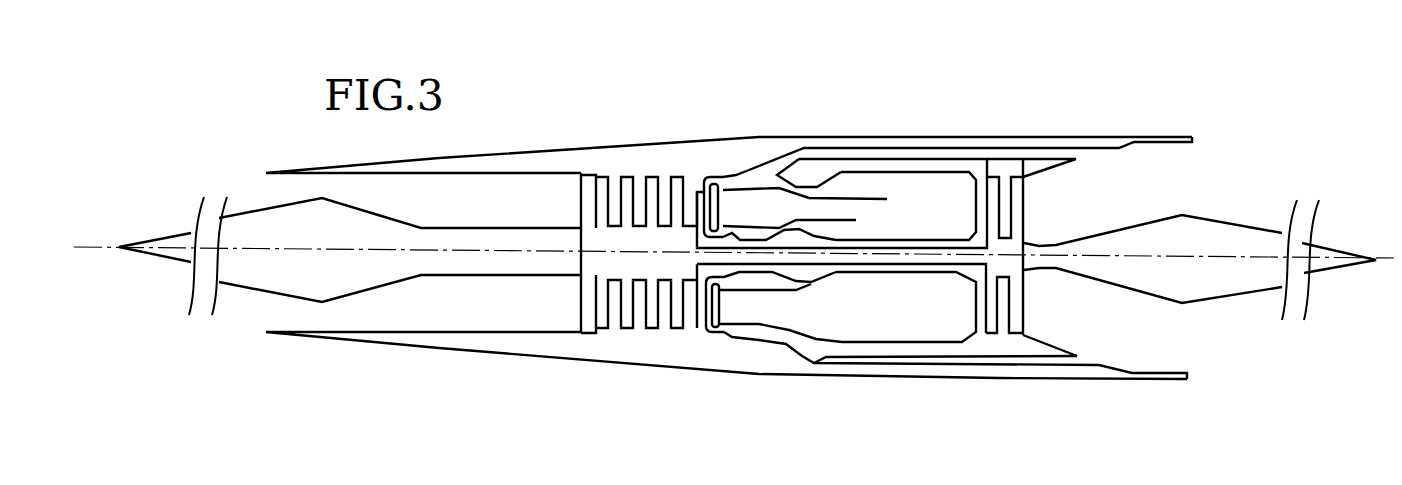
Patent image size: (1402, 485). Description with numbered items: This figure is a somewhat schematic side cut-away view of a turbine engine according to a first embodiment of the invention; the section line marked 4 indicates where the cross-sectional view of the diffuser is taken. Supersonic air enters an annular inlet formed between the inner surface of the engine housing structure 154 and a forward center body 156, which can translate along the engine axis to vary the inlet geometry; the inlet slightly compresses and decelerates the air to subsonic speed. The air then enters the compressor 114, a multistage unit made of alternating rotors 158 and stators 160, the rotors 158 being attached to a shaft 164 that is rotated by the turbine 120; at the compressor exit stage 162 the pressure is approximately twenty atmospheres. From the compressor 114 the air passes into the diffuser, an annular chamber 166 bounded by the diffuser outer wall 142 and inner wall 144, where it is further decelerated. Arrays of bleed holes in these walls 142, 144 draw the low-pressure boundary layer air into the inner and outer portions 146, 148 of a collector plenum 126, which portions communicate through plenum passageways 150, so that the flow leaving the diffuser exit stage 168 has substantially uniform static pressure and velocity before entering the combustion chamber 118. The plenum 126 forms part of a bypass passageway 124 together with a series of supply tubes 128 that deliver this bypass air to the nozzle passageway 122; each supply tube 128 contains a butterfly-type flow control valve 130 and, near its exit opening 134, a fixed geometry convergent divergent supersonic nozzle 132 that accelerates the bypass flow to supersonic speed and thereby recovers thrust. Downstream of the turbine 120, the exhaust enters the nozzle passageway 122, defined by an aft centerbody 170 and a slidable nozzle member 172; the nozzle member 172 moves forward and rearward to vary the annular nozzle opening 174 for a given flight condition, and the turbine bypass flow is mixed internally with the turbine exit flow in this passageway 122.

The section line 4- 4 is at (799, 112).
The compressor 114 is at (618, 152).
The combustion chamber 118 is at (893, 182).
The turbine 120 is at (1000, 162).
The nozzle passageway 122 is at (1100, 198).
The bypass passageway 124 is at (979, 135).
The collector plenum 126 is at (757, 160).
The supply tubes 128 is at (930, 149).
The flow control valve 130 is at (852, 149).
The fixed geometry convergent divergent supersonic nozzle 132 is at (1033, 148).
The exit openings 134 is at (1088, 152).
The diffuser outer wall 142 is at (849, 206).
The diffuser inner wall 144 is at (811, 225).
The inner portion of collector plenum 146 is at (752, 278).
The outer portion of collector plenum 148 is at (757, 337).
The plenum passageways 150 is at (706, 190).
The engine housing structure 154 is at (594, 158).
The forward center body 156 is at (260, 276).
The rotors 158 is at (582, 193).
The stators 160 is at (703, 207).
The compressor exit stage 162 is at (727, 177).
The shaft 164 is at (841, 303).
The annular chamber 166 is at (760, 318).
The diffuser exit stage 168 is at (918, 223).
The aft centerbody 170 is at (1233, 278).
The slidable nozzle member 172 is at (1160, 136).
The annular nozzle opening 174 is at (1185, 198).